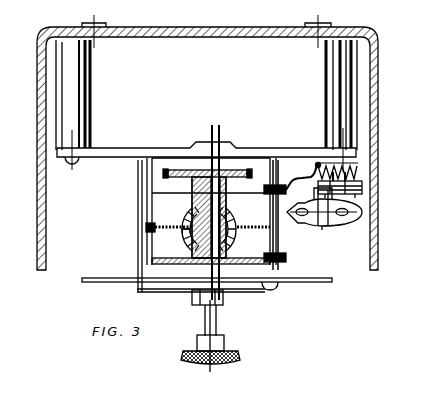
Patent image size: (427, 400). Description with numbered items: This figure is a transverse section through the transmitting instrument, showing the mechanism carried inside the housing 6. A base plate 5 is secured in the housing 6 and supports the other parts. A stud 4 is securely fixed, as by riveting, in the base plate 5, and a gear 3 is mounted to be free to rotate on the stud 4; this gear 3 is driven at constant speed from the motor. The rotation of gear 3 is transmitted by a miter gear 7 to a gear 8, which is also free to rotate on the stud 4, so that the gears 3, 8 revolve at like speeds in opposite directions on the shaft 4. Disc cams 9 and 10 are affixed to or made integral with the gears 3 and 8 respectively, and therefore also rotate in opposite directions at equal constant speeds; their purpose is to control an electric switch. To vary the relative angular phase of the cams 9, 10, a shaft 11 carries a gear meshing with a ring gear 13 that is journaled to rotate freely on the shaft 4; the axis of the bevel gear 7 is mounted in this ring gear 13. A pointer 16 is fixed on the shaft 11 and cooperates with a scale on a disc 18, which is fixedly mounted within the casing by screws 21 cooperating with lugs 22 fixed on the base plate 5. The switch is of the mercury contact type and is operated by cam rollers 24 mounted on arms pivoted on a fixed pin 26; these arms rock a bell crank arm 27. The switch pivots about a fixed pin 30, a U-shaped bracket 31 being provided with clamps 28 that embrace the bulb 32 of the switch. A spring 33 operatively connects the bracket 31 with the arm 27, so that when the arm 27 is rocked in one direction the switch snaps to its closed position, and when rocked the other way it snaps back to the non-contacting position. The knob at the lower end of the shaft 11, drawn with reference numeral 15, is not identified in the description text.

The gear 3 is at (234, 166).
The stud 4 is at (214, 140).
The base plate 5 is at (116, 148).
The housing 6 is at (378, 77).
The miter gear 7 is at (231, 219).
The gear 8 is at (231, 254).
The disc cam 9 is at (250, 264).
The disc cam 10 is at (145, 207).
The shaft 11 is at (217, 318).
The ring gear 13 is at (146, 228).
The knob 15 is at (236, 357).
The pointer 16 is at (172, 293).
The disc 18 is at (328, 283).
The screw 21 is at (272, 285).
The lug 22 is at (138, 242).
The cam roller 24 is at (286, 257).
The fixed pin 26 is at (279, 239).
The bell crank arm 27 is at (298, 176).
The clamp 28 is at (324, 228).
The fixed pin 30 is at (362, 182).
The U-shaped bracket 31 is at (364, 187).
The bulb 32 is at (364, 213).
The spring 33 is at (356, 168).